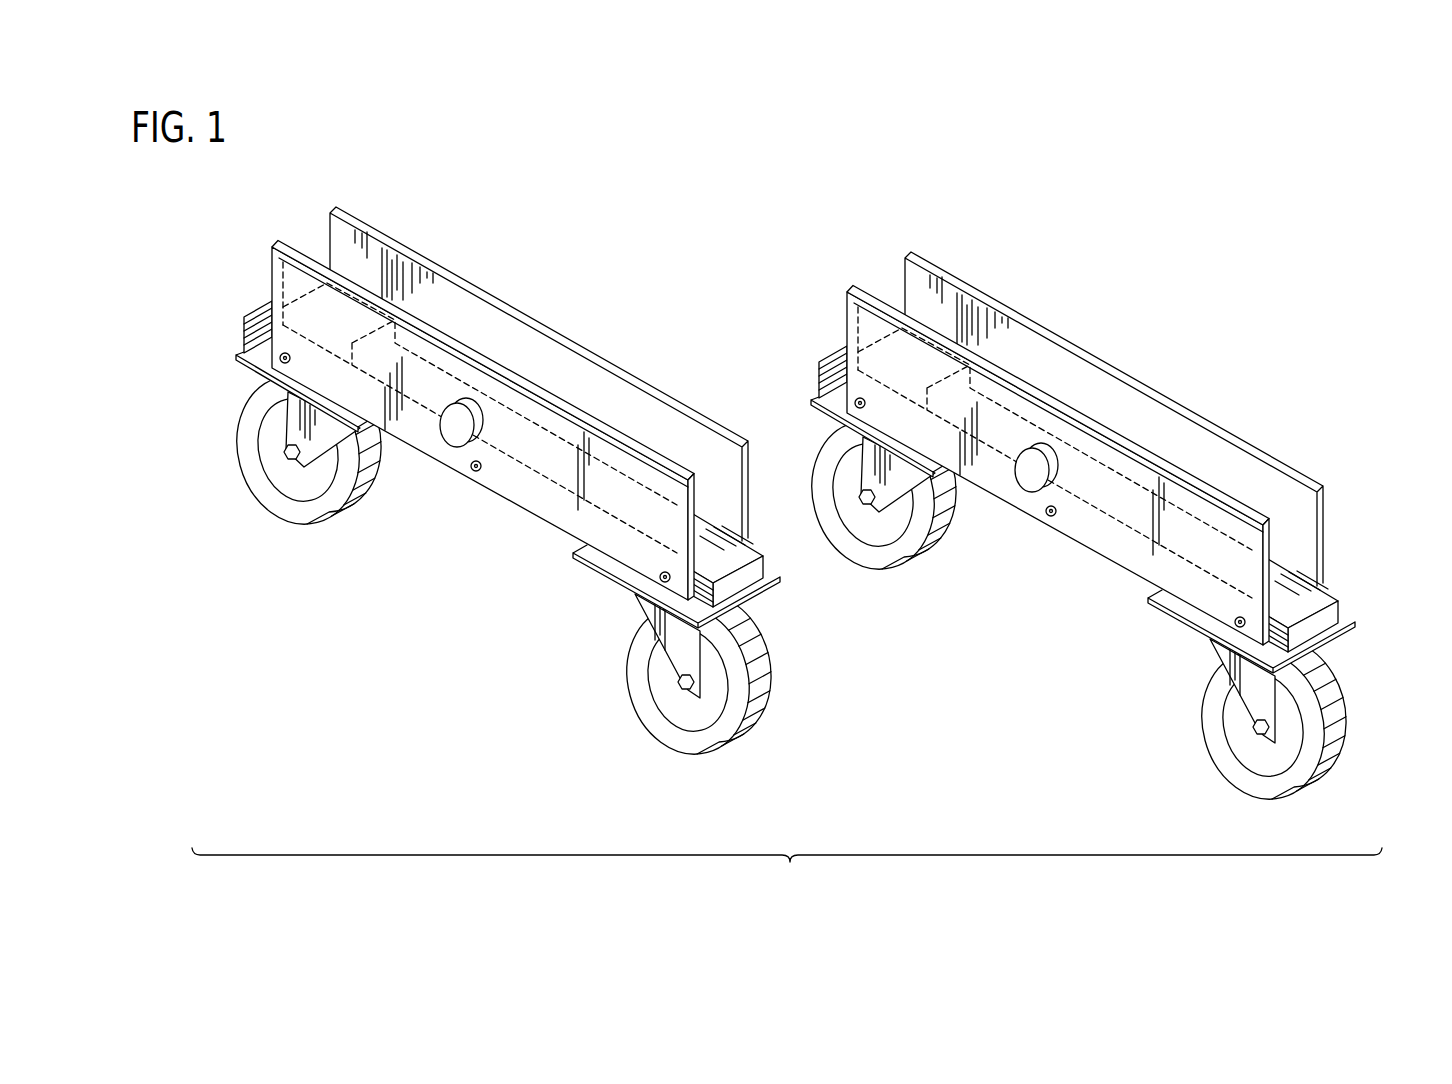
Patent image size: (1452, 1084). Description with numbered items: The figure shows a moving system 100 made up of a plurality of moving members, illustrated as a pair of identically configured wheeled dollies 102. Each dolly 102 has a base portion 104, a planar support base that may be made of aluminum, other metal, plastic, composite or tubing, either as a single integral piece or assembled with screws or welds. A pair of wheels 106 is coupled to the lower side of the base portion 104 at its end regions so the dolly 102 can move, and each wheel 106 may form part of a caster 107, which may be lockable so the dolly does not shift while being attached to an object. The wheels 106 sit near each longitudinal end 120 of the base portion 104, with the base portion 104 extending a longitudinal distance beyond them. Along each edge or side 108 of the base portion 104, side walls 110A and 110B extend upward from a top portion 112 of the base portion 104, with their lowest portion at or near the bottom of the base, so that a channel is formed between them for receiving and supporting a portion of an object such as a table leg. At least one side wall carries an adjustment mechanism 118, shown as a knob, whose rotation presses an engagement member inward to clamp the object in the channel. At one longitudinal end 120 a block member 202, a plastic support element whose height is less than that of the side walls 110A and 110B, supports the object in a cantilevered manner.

The moving system 100 is at (807, 546).
The wheeled dolly 102 is at (526, 258).
The base portion 104 is at (835, 362).
The wheel 106 is at (922, 564).
The caster 107 is at (1102, 610).
The edge or side of the base portion 108 is at (829, 386).
The side wall 110A is at (1090, 533).
The side wall 110B is at (1322, 518).
The top portion of the base portion 112 is at (1293, 608).
The adjustment mechanism 118 is at (1022, 478).
The longitudinal end of the base portion 120 is at (1069, 494).
The block member 202 is at (877, 333).